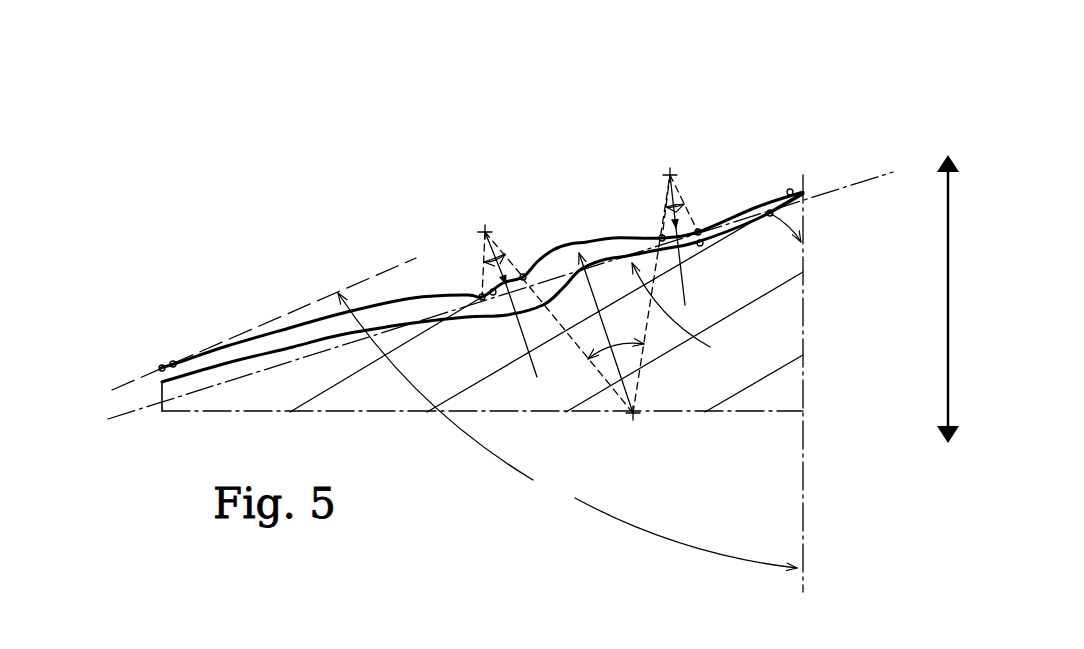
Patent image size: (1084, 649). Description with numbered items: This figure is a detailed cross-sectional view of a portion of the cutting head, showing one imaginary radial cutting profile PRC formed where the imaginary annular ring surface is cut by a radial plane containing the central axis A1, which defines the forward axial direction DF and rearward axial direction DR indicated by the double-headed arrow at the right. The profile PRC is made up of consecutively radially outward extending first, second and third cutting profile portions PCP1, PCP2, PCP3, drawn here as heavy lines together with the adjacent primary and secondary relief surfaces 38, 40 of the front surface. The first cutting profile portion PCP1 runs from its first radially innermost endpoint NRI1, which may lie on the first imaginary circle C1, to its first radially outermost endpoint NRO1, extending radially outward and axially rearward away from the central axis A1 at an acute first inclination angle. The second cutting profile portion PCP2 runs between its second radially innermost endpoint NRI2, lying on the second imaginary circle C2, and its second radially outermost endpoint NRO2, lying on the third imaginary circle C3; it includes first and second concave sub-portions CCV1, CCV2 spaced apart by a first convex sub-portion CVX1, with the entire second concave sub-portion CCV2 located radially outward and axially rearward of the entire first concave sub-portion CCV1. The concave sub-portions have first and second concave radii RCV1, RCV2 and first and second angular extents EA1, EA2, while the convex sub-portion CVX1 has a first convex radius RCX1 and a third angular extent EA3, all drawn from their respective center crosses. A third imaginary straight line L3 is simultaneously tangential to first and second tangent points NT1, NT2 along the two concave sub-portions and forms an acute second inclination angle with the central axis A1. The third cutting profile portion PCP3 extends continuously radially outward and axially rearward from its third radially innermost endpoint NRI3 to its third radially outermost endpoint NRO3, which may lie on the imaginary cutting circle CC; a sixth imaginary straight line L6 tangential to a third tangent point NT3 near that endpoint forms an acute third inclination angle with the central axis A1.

The primary relief surface 38 is at (228, 356).
The secondary relief surface 40 is at (583, 237).
The first cutting profile portion PCP1 is at (772, 200).
The second cutting profile portion PCP2 is at (566, 236).
The third cutting profile portion PCP3 is at (320, 320).
The imaginary radial cutting profile PRC is at (365, 302).
The first radially innermost endpoint NRI1 is at (833, 149).
The second radially innermost endpoint NRI2 is at (690, 156).
The third radially innermost endpoint NRI3 is at (419, 205).
The first radially outermost endpoint NRO1 is at (690, 156).
The second radially outermost endpoint NRO2 is at (419, 205).
The third radially outermost endpoint NRO3 is at (103, 340).
The first imaginary circle C1 is at (790, 189).
The second imaginary circle C2 is at (699, 229).
The third imaginary circle C3 is at (480, 295).
The imaginary cutting circle CC is at (161, 366).
The first convex sub-portion CVX1 is at (561, 239).
The first concave sub-portion CCV1 is at (667, 250).
The second concave sub-portion CCV2 is at (497, 297).
The first concave radius RCV1 is at (697, 236).
The second concave radius RCV2 is at (518, 313).
The first convex radius RCX1 is at (606, 336).
The first angular extent EA1 is at (666, 207).
The second angular extent EA2 is at (508, 254).
The third angular extent EA3 is at (596, 294).
The first tangent point NT1 is at (704, 246).
The second tangent point NT2 is at (480, 298).
The third tangent point NT3 is at (173, 362).
The third imaginary straight line L3 is at (499, 298).
The sixth imaginary straight line L6 is at (259, 324).
The central axis A1 is at (812, 386).
The forward axial direction DF is at (949, 301).
The rearward axial direction DR is at (949, 301).